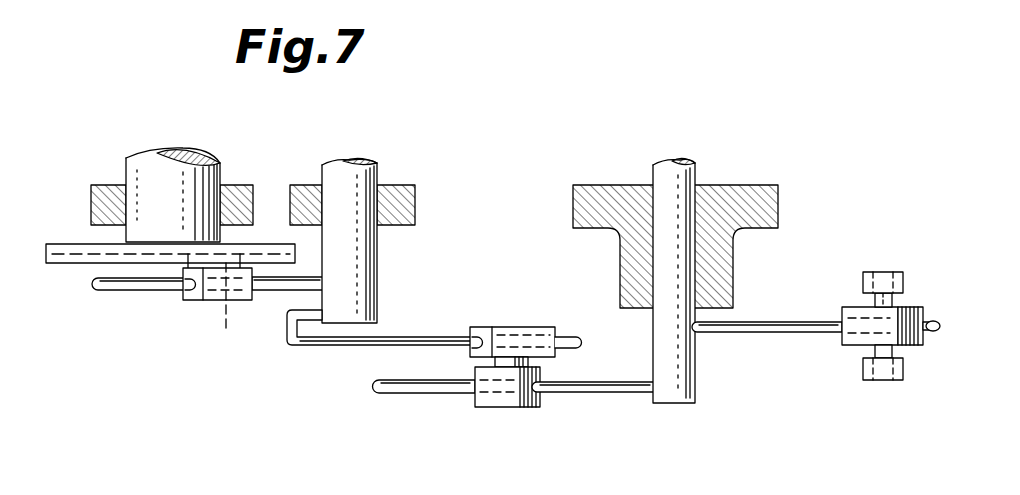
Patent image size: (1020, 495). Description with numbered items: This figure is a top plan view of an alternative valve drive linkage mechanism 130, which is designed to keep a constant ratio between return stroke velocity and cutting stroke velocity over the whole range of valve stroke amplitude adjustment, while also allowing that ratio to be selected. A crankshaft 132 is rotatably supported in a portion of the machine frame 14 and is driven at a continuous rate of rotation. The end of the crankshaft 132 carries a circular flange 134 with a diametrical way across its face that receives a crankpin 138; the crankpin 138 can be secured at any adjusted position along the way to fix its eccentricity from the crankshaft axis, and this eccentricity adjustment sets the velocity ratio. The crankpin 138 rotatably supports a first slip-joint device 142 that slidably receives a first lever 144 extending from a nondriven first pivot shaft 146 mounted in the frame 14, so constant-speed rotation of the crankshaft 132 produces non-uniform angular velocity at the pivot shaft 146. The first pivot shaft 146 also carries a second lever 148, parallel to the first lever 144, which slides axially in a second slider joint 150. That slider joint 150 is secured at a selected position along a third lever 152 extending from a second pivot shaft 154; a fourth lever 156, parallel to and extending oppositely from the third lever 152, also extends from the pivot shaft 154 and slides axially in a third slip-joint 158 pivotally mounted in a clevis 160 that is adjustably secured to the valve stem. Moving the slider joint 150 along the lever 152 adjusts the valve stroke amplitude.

The machine frame 14 is at (100, 203).
The valve drive linkage mechanism 130 is at (497, 307).
The crankshaft 132 is at (188, 153).
The circular flange 134 is at (72, 267).
The crankpin 138 is at (233, 330).
The first slip-joint device 142 is at (207, 287).
The first lever 144 is at (133, 283).
The first pivot shaft 146 is at (367, 267).
The second lever 148 is at (430, 340).
The second slider joint 150 is at (525, 332).
The third lever 152 is at (590, 385).
The second pivot shaft 154 is at (685, 375).
The fourth lever 156 is at (772, 323).
The third slip-joint 158 is at (858, 338).
The clevis 160 is at (880, 280).